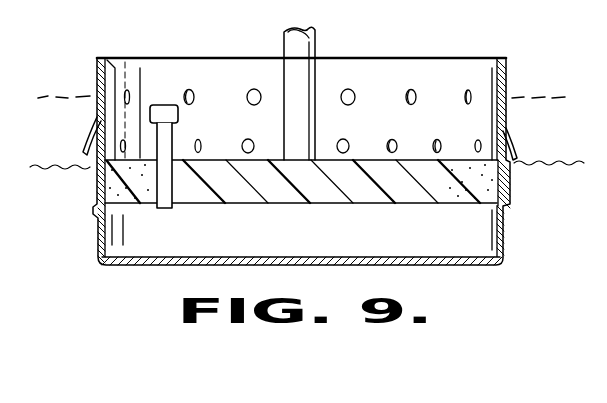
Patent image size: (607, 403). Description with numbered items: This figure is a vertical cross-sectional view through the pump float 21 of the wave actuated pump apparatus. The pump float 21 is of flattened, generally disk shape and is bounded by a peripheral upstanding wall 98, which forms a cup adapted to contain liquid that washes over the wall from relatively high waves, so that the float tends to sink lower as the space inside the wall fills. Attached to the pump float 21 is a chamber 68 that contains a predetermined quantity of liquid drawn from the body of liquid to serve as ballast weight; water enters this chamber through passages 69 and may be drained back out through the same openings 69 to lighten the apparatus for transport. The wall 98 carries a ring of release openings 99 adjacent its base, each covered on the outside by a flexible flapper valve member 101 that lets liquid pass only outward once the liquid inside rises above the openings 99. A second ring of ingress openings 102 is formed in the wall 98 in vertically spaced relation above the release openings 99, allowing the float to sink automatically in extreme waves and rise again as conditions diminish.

The pump float 21 is at (437, 268).
The chamber 68 is at (316, 246).
The passages 69 is at (160, 209).
The peripheral upstanding wall 98 is at (499, 58).
The release openings 99 is at (350, 146).
The flapper valve members 101 is at (520, 138).
The ingress openings 102 is at (466, 88).